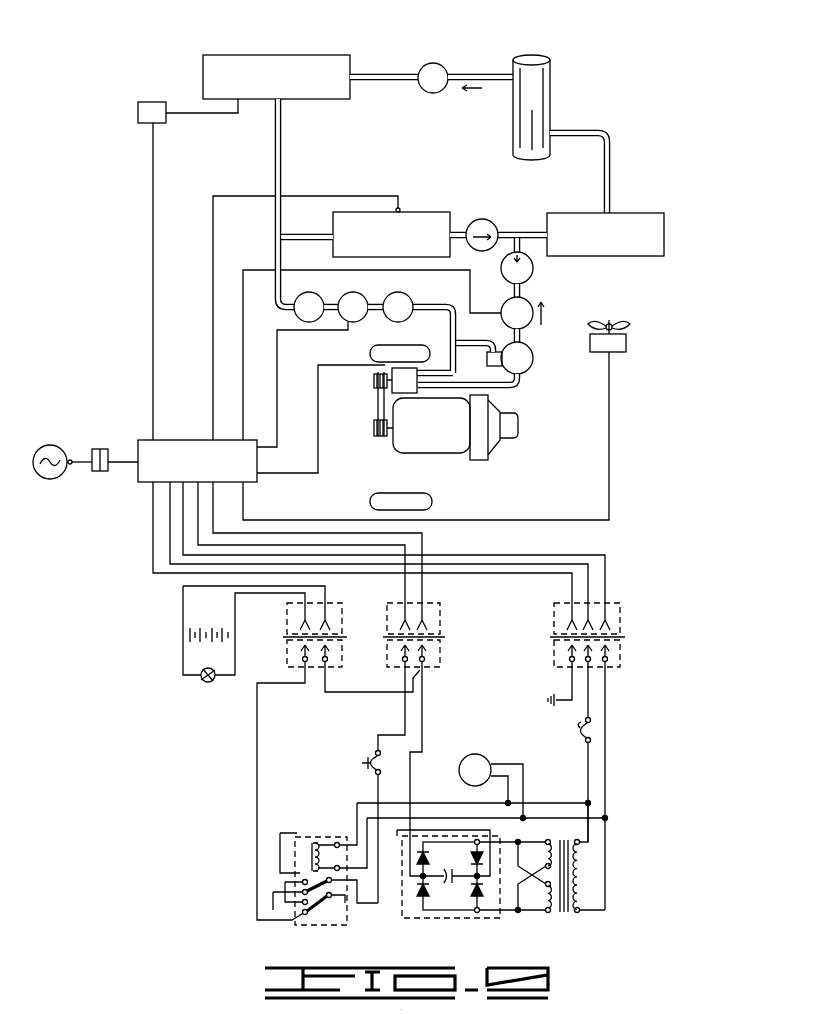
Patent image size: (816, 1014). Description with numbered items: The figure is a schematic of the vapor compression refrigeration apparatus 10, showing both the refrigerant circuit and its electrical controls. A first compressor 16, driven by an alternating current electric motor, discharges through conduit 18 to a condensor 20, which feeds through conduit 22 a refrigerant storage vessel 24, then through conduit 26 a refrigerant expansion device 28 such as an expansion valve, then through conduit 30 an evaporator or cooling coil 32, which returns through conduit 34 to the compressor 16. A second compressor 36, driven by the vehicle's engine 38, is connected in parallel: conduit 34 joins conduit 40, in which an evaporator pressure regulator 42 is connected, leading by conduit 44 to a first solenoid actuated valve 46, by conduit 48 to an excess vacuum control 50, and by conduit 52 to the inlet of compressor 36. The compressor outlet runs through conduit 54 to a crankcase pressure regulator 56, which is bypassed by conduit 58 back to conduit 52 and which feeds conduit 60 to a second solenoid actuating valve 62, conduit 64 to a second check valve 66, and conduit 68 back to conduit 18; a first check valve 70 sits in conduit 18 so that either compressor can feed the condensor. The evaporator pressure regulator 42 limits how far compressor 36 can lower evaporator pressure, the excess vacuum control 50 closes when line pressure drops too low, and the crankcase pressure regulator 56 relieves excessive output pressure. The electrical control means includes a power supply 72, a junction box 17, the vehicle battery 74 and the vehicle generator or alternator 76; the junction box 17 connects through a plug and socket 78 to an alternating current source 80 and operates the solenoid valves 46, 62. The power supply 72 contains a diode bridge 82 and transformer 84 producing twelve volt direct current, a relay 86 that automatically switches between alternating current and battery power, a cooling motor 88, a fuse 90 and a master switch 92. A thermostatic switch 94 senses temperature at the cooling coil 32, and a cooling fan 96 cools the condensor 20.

The refrigeration apparatus 10 is at (661, 114).
The compressor 16 is at (413, 219).
The junction box 17 is at (143, 480).
The conduit 18 is at (499, 233).
The condensor 20 is at (638, 213).
The conduit 22 is at (611, 173).
The refrigerant storage vessel 24 is at (540, 88).
The conduit 26 is at (480, 72).
The refrigerant expansion device 28 is at (437, 63).
The conduit 30 is at (378, 72).
The evaporator or cooling coil 32 is at (272, 57).
The conduit 34 is at (283, 121).
The second compressor 36 is at (403, 383).
The vehicle's engine 38 is at (441, 436).
The conduit 40 is at (275, 259).
The evaporator pressure regulator 42 is at (297, 313).
The conduit 44 is at (335, 294).
The first solenoid actuated valve 46 is at (363, 318).
The conduit 48 is at (377, 305).
The excess vacuum control 50 is at (413, 302).
The conduit 52 is at (450, 329).
The conduit 54 is at (521, 386).
The crankcase pressure regulator 56 is at (533, 359).
The conduit 58 is at (465, 343).
The conduit 60 is at (523, 338).
The second solenoid actuating valve 62 is at (531, 319).
The conduit 64 is at (523, 290).
The second check valve 66 is at (534, 266).
The conduit 68 is at (512, 249).
The first check valve 70 is at (471, 219).
The power supply 72 is at (626, 803).
The vehicle battery 74 is at (205, 632).
The vehicle generator or alternator 76 is at (207, 684).
The plug and socket 78 is at (104, 449).
The source of alternating current electrical power 80 is at (52, 446).
The diode bridge 82 is at (456, 920).
The transformer 84 is at (566, 912).
The relay 86 is at (314, 927).
The cooling motor 88 is at (470, 757).
The fuse 90 is at (581, 742).
The master switch 92 is at (368, 764).
The thermostatic switch 94 is at (138, 114).
The cooling fan 96 is at (626, 343).